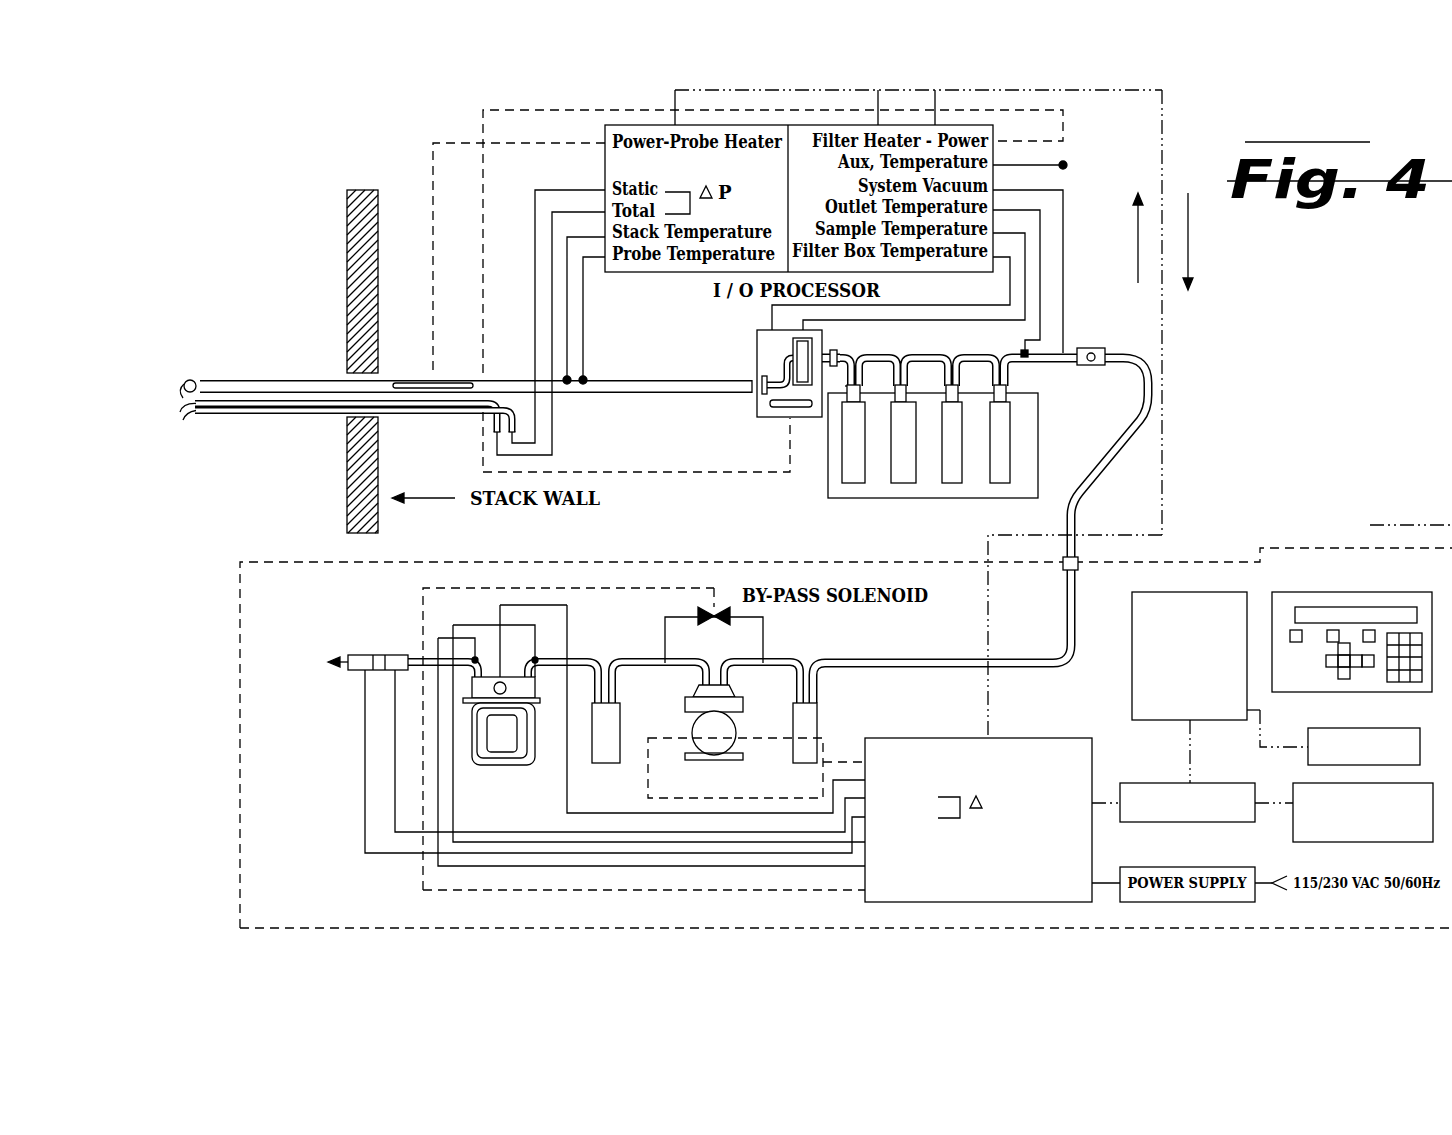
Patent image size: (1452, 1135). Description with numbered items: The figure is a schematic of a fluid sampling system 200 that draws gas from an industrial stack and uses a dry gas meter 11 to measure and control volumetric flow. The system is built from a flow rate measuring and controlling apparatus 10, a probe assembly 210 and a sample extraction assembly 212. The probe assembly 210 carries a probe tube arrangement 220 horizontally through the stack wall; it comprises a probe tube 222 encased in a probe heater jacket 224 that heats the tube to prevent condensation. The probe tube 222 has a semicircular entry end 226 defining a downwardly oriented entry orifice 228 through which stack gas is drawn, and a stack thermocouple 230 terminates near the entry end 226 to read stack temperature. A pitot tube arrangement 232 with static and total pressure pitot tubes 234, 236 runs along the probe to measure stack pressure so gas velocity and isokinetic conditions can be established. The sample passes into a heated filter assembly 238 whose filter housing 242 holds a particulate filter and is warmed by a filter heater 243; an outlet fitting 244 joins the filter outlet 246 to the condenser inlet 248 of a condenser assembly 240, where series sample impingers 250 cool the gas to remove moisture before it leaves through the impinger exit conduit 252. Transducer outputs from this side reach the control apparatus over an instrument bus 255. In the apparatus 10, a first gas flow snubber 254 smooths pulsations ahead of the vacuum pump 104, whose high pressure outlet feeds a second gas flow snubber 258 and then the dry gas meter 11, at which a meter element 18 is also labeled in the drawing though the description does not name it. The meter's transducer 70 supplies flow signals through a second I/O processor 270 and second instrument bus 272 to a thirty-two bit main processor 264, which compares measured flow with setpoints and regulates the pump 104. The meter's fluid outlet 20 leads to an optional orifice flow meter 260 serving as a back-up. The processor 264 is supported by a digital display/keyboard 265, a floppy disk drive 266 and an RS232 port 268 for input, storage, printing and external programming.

The flow rate measuring and controlling apparatus 10 is at (675, 545).
The dry gas meter 11 is at (535, 732).
The meter outlet temperature sensor 18 is at (520, 672).
The fluid outlet 20 is at (490, 657).
The transducer 70 is at (506, 690).
The vacuum pump 104 is at (737, 731).
The fluid sampling system 200 is at (1202, 120).
The probe assembly 210 is at (220, 315).
The sample extraction assembly 212 is at (1122, 337).
The probe tube arrangement 220 is at (218, 380).
The probe tube 222 is at (198, 381).
The probe heater jacket 224 is at (278, 378).
The entry end 226 is at (184, 388).
The entry orifice 228 is at (190, 398).
The stack thermocouple 230 is at (196, 408).
The pitot tube arrangement 232 is at (243, 426).
The static pressure pitot tube 234 is at (293, 399).
The total pressure pitot tube 236 is at (320, 410).
The heated filter assembly 238 is at (770, 306).
The condenser assembly 240 is at (1095, 333).
The filter housing 242 is at (793, 348).
The filter heater 243 is at (757, 398).
The outlet fitting 244 is at (845, 365).
The filter outlet 246 is at (836, 350).
The condenser inlet 248 is at (890, 355).
The sample impingers 250 is at (1015, 425).
The impinger exit conduit 252 is at (1043, 352).
The first gas flow snubber 254 is at (765, 713).
The instrument bus 255 is at (1162, 450).
The second gas flow snubber 258 is at (625, 722).
The orifice flow meter 260 is at (358, 670).
The 32 bit main processor 264 is at (1132, 655).
The digital display/keyboard 265 is at (1332, 694).
The floppy disk drive 266 is at (1318, 843).
The RS232 port 268 is at (1325, 765).
The second I/O processor 270 is at (1080, 737).
The second instrument bus 272 is at (1106, 803).